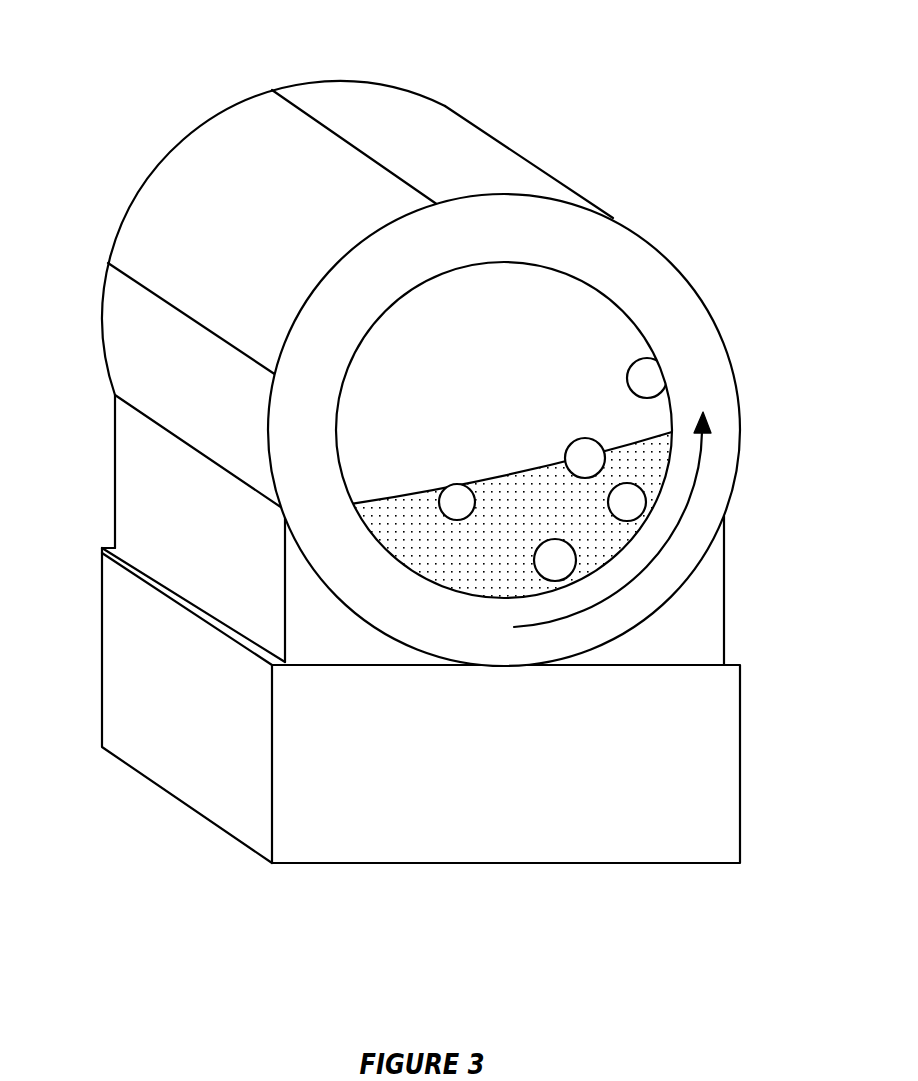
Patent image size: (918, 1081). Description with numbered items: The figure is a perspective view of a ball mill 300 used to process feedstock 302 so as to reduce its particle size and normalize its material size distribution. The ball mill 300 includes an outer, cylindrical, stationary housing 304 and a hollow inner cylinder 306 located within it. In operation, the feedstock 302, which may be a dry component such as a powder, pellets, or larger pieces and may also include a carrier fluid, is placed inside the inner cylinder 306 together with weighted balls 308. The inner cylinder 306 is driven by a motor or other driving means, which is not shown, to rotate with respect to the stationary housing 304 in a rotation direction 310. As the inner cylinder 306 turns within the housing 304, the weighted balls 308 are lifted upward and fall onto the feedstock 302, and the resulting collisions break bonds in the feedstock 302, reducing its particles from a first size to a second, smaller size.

The ball mill 300 is at (133, 138).
The feedstock 302 is at (550, 488).
The stationary housing 304 is at (430, 128).
The inner cylinder 306 is at (568, 273).
The weighted balls 308 is at (585, 458).
The rotation direction 310 is at (703, 476).